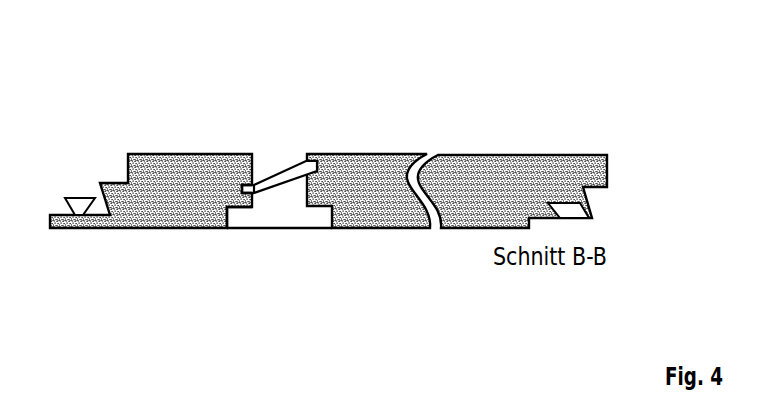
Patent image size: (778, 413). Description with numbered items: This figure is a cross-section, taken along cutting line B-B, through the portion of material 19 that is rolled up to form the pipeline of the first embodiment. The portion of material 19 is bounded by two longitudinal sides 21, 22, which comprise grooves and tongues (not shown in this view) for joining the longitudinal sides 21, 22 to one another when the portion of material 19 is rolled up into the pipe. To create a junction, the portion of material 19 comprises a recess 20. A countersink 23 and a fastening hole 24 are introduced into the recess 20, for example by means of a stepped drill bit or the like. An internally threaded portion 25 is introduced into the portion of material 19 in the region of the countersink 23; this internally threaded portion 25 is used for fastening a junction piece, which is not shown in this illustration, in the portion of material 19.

The portion of material 19 is at (360, 167).
The recess 20 is at (273, 240).
The longitudinal side 21 is at (132, 133).
The longitudinal side 22 is at (575, 130).
The countersink 23 is at (228, 215).
The fastening hole 24 is at (265, 173).
The internally threaded portion 25 is at (278, 172).